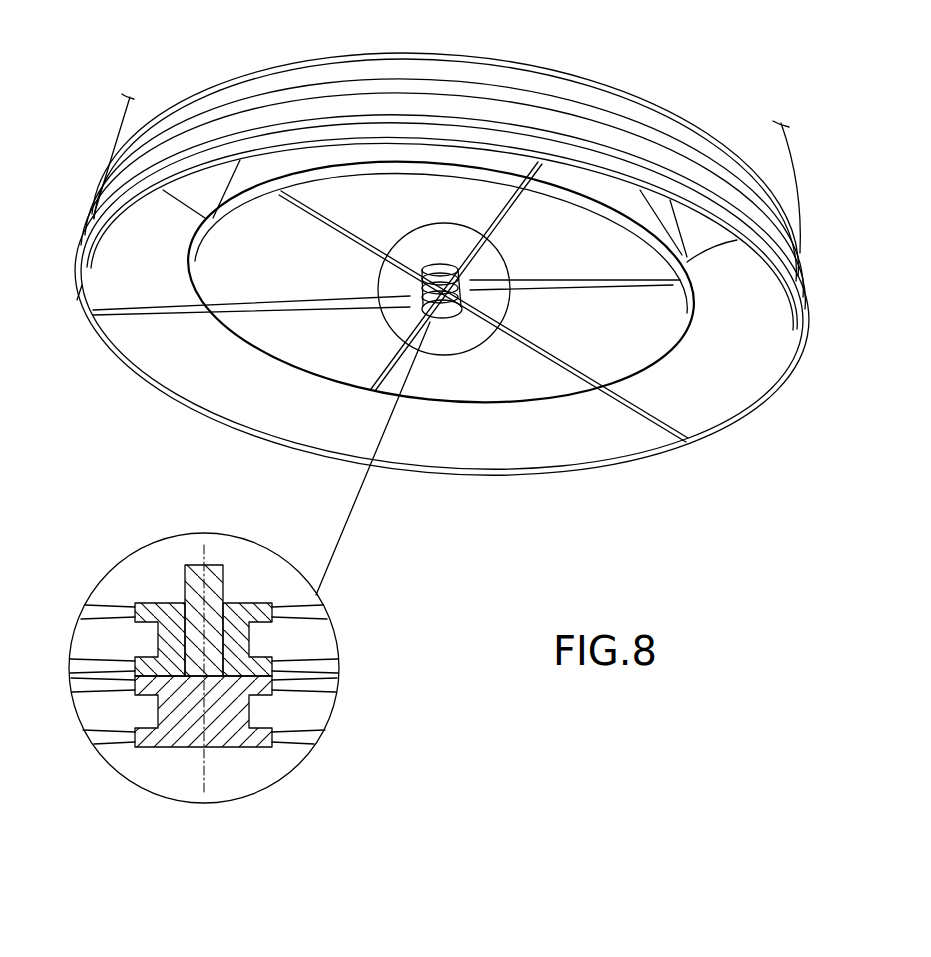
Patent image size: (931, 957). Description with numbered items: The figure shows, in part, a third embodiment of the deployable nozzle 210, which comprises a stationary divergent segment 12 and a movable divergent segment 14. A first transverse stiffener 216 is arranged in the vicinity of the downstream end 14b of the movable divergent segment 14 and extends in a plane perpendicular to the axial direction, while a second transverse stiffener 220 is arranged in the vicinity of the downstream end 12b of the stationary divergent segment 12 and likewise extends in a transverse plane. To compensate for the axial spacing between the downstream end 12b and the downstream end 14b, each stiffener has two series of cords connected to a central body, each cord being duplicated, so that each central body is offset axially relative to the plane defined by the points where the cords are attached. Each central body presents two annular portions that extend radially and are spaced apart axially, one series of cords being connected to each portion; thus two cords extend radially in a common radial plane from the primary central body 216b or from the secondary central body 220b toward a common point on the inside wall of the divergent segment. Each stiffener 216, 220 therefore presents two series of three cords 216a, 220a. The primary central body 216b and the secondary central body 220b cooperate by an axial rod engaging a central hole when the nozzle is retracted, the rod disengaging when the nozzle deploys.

The deployable nozzle 210 is at (157, 93).
The movable divergent segment 14 is at (113, 133).
The downstream end of the movable divergent segment 14b is at (77, 306).
The stationary divergent segment 12 is at (196, 228).
The downstream end of the stationary divergent segment 12b is at (686, 340).
The second transverse stiffener 220 is at (332, 231).
The cords of the second stiffener 220a is at (613, 284).
The secondary central body 220b is at (163, 617).
The first transverse stiffener 216 is at (185, 318).
The cords of the first stiffener 216a is at (372, 309).
The primary central body 216b is at (220, 737).